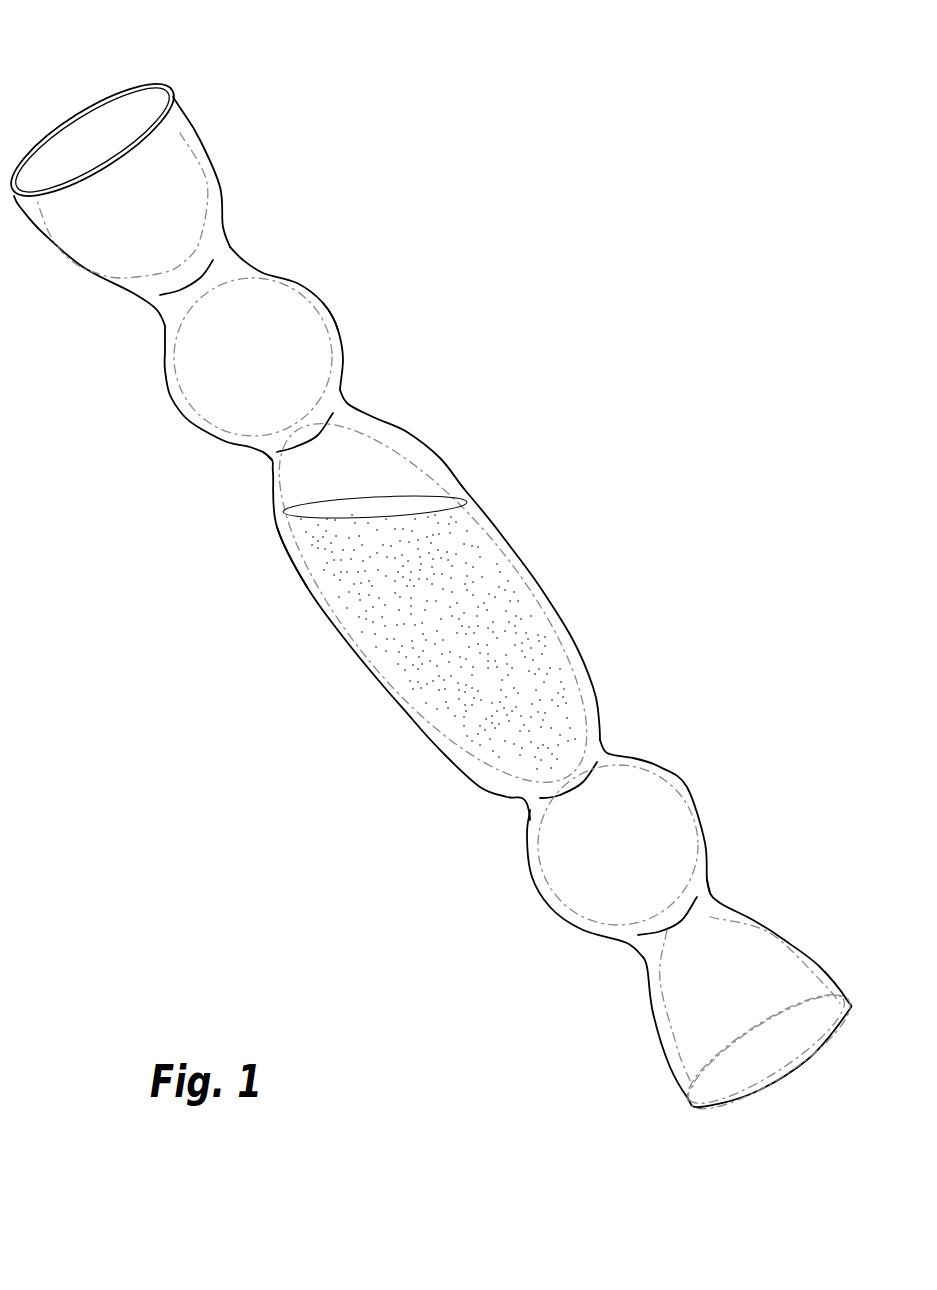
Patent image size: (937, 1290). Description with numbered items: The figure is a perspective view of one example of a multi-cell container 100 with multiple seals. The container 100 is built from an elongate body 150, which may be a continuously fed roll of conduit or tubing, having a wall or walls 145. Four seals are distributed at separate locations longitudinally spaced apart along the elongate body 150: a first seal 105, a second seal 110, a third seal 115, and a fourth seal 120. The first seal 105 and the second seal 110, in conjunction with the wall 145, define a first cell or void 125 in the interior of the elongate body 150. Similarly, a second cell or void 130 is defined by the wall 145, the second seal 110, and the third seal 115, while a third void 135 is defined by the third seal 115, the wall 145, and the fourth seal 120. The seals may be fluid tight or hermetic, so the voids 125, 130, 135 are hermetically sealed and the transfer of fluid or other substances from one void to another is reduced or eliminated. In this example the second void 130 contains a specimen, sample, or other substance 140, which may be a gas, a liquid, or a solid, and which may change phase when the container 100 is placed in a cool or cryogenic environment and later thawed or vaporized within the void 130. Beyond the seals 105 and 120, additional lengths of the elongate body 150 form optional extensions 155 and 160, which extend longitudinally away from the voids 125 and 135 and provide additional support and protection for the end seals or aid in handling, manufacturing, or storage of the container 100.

The container 100 is at (440, 220).
The first seal 105 is at (242, 248).
The second seal 110 is at (353, 393).
The third seal 115 is at (613, 742).
The fourth seal 120 is at (723, 892).
The cell or void 125 is at (207, 383).
The second cell or void 130 is at (303, 487).
The third void 135 is at (678, 815).
The substance 140 is at (498, 590).
The wall 145 is at (323, 308).
The elongate body 150 is at (373, 677).
The extension 155 is at (78, 110).
The extension 160 is at (758, 1057).